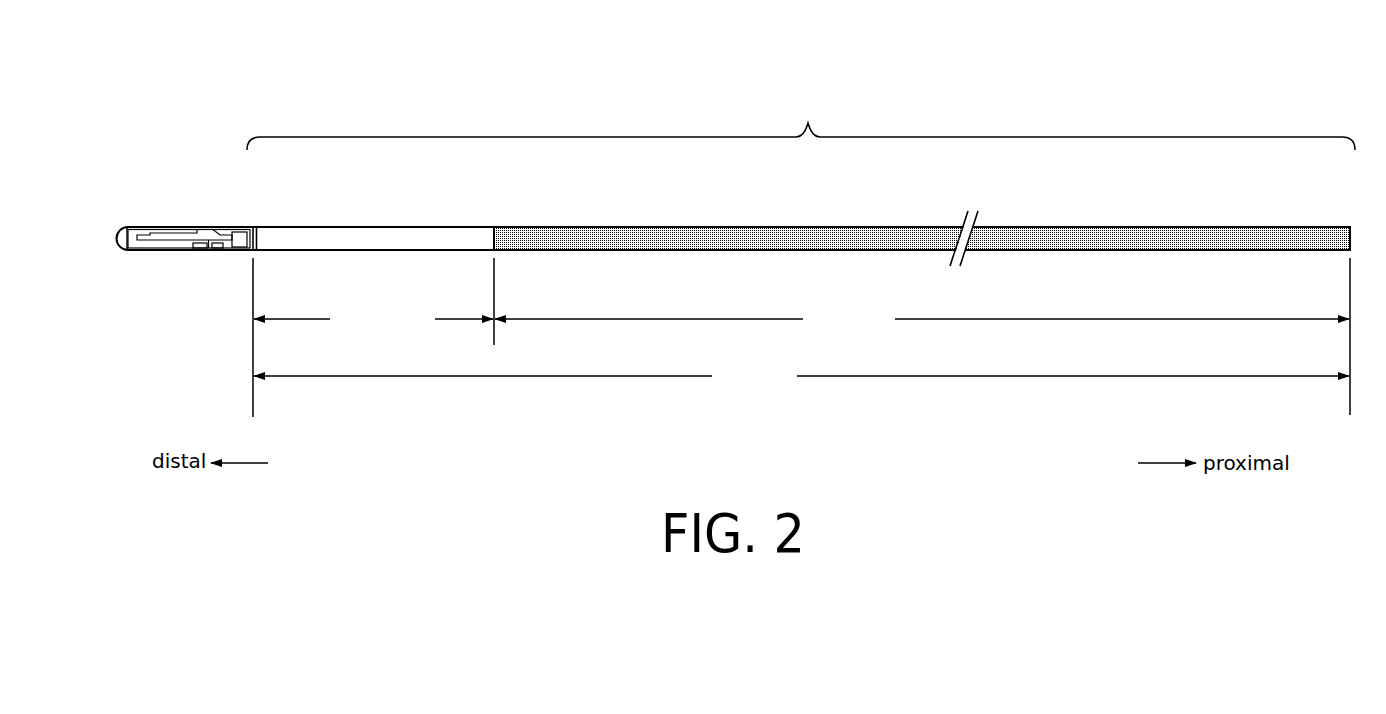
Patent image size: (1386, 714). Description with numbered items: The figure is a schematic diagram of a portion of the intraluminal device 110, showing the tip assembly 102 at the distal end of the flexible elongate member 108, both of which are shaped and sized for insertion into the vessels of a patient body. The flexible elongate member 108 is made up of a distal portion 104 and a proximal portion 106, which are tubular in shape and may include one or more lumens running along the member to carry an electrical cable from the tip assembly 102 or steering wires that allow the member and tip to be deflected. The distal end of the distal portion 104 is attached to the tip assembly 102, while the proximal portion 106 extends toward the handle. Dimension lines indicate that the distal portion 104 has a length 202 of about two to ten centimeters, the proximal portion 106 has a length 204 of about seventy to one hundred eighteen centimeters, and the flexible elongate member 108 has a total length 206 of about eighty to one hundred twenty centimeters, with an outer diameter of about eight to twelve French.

The tip assembly 102 is at (178, 227).
The distal portion 104 is at (378, 227).
The proximal portion 106 is at (685, 227).
The flexible elongate member 108 is at (801, 120).
The intraluminal device 110 is at (736, 153).
The length of distal portion 202 is at (373, 322).
The length of proximal portion 204 is at (922, 320).
The total length 206 is at (801, 379).